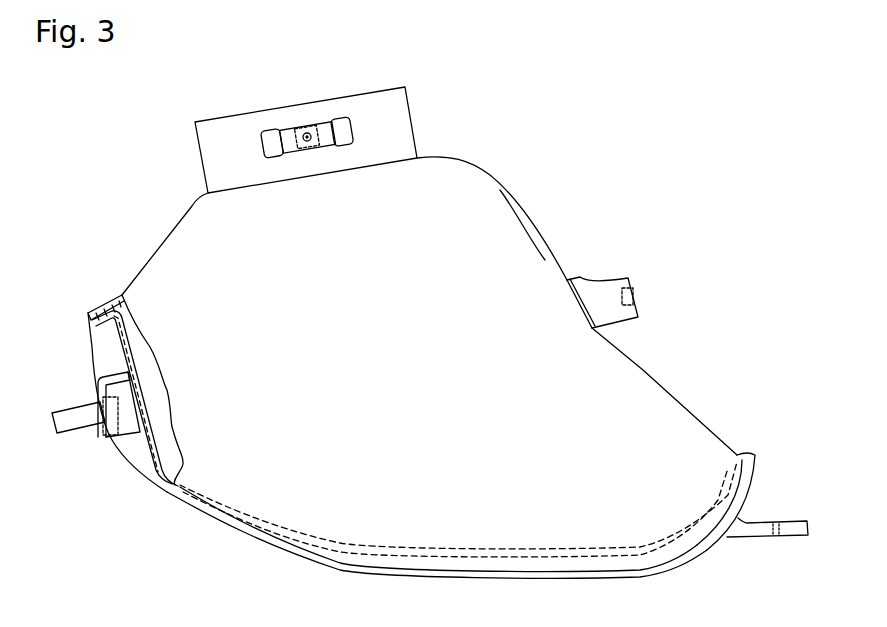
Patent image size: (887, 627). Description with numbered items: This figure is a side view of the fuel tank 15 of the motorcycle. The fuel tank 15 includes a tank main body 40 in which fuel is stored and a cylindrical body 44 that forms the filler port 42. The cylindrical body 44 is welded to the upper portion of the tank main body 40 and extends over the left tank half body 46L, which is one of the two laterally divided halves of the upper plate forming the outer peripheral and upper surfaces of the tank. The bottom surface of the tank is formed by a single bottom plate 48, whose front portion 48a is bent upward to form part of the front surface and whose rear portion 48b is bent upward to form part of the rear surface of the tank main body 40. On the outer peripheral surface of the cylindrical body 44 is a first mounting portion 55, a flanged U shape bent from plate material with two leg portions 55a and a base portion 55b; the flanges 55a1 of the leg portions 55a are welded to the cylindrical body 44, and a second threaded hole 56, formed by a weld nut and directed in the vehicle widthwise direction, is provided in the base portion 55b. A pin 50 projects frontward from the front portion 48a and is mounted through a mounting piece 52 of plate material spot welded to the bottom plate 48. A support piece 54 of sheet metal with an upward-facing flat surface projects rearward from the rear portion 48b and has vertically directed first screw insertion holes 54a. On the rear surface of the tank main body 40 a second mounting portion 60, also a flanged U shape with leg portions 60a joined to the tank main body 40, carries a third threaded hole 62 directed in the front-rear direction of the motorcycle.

The fuel tank 15 is at (578, 110).
The tank main body 40 is at (515, 180).
The filler port 42 is at (380, 90).
The cylindrical body 44 is at (397, 140).
The left tank half body 46L is at (507, 233).
The bottom plate 48 is at (360, 577).
The front portion of the bottom plate 48a is at (162, 470).
The rear portion of the bottom plate 48b is at (745, 488).
The pin 50 is at (75, 420).
The mounting piece 52 is at (112, 378).
The support piece 54 is at (800, 522).
The first screw insertion hole 54a is at (776, 537).
The first mounting portion 55 is at (283, 122).
The leg portion 55a is at (262, 141).
The flange 55a1 is at (262, 128).
The base portion 55b is at (325, 120).
The second threaded hole 56 is at (307, 133).
The second mounting portion 60 is at (602, 277).
The leg portion 60a is at (608, 312).
The third threaded hole 62 is at (636, 300).